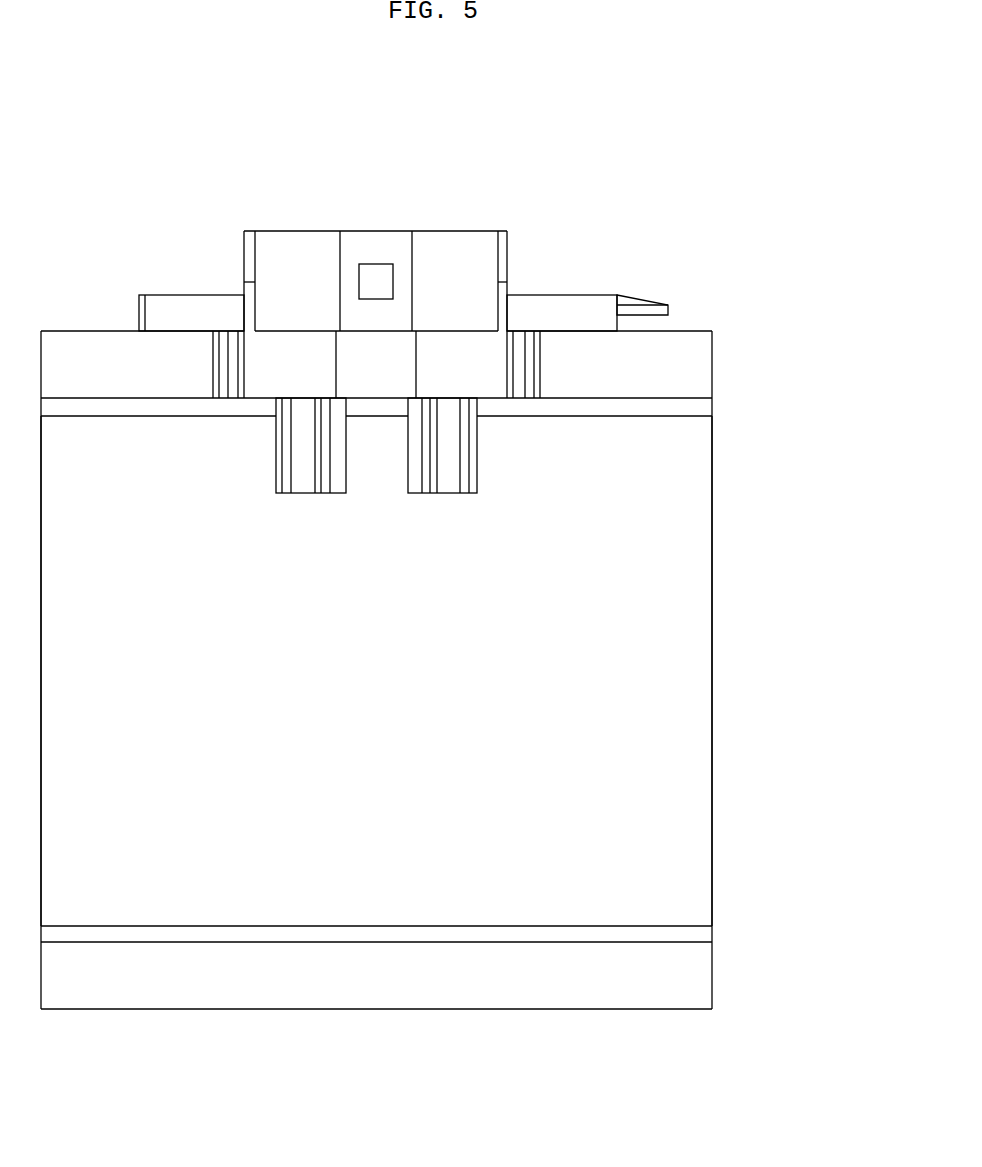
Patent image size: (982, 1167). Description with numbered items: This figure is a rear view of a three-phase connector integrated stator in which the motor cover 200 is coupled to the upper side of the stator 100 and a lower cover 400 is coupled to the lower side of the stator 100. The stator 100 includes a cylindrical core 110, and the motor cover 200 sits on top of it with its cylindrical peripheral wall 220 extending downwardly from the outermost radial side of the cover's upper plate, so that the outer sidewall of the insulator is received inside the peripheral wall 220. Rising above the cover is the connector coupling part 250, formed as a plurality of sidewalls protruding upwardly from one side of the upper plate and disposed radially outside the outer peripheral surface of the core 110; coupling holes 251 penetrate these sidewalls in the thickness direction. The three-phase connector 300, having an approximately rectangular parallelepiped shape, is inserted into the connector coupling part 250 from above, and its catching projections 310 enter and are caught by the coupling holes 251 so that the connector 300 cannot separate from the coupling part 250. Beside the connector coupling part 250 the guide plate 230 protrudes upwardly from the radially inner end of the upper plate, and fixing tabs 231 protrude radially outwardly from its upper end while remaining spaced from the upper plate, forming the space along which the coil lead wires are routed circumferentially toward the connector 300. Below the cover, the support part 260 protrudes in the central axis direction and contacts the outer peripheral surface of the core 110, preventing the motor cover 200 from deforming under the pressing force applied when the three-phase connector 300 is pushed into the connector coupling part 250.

The stator 100 is at (738, 793).
The core 110 is at (680, 681).
The motor cover 200 is at (738, 372).
The peripheral wall 220 is at (697, 347).
The guide plate 230 is at (137, 311).
The fixing tabs 231 is at (642, 297).
The connector coupling part 250 is at (359, 230).
The coupling holes 251 is at (383, 262).
The support part 260 is at (477, 446).
The 3-phase connector 300 is at (282, 208).
The catching projections 310 is at (388, 283).
The lower cover 400 is at (680, 977).